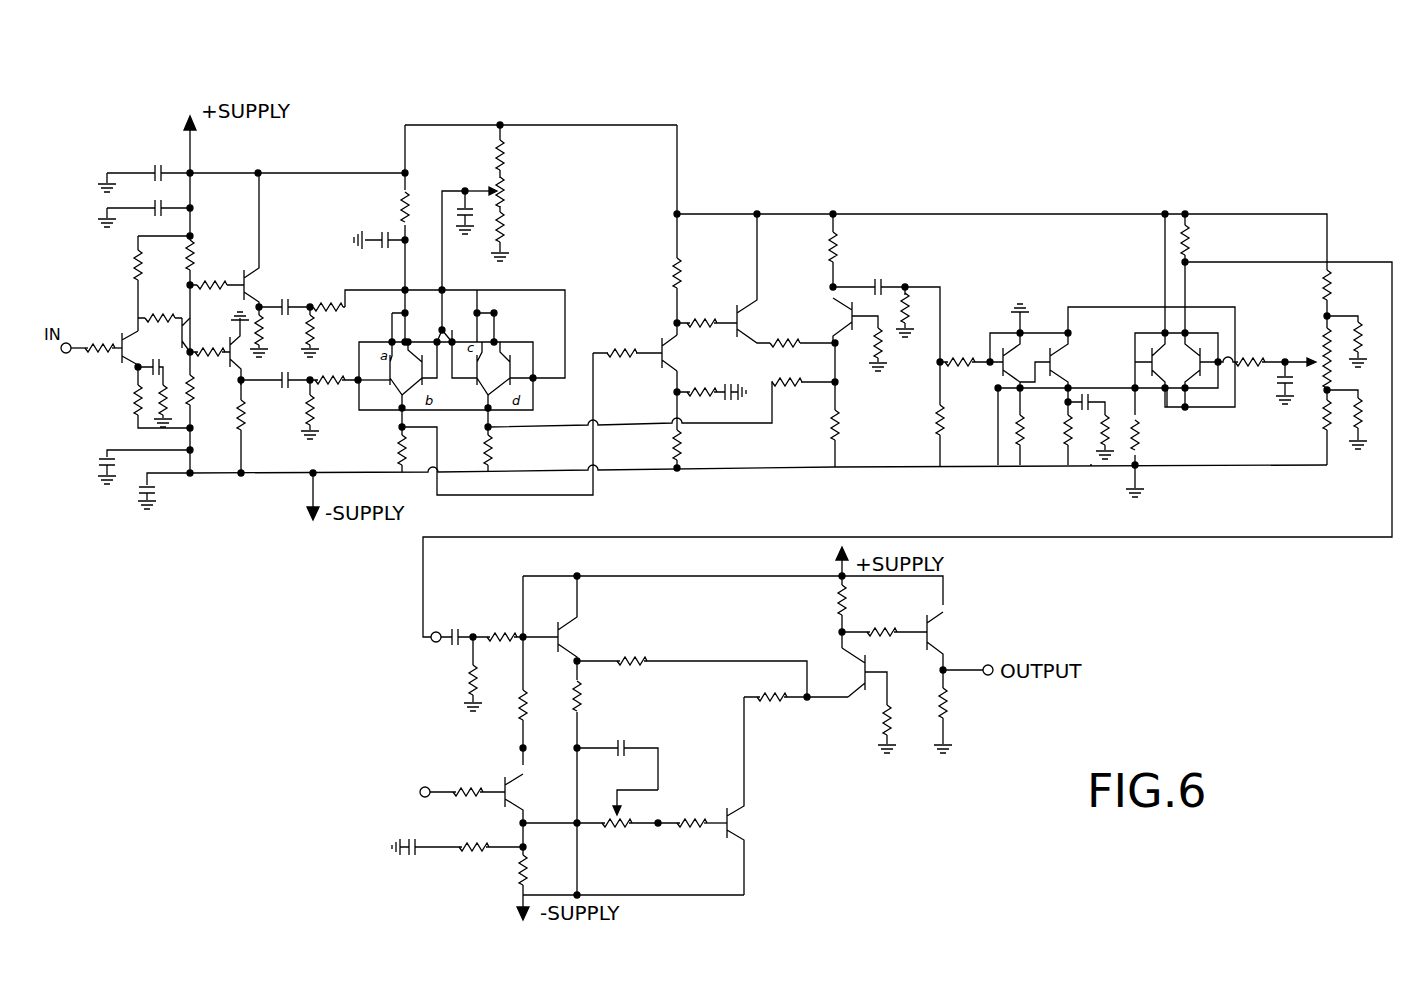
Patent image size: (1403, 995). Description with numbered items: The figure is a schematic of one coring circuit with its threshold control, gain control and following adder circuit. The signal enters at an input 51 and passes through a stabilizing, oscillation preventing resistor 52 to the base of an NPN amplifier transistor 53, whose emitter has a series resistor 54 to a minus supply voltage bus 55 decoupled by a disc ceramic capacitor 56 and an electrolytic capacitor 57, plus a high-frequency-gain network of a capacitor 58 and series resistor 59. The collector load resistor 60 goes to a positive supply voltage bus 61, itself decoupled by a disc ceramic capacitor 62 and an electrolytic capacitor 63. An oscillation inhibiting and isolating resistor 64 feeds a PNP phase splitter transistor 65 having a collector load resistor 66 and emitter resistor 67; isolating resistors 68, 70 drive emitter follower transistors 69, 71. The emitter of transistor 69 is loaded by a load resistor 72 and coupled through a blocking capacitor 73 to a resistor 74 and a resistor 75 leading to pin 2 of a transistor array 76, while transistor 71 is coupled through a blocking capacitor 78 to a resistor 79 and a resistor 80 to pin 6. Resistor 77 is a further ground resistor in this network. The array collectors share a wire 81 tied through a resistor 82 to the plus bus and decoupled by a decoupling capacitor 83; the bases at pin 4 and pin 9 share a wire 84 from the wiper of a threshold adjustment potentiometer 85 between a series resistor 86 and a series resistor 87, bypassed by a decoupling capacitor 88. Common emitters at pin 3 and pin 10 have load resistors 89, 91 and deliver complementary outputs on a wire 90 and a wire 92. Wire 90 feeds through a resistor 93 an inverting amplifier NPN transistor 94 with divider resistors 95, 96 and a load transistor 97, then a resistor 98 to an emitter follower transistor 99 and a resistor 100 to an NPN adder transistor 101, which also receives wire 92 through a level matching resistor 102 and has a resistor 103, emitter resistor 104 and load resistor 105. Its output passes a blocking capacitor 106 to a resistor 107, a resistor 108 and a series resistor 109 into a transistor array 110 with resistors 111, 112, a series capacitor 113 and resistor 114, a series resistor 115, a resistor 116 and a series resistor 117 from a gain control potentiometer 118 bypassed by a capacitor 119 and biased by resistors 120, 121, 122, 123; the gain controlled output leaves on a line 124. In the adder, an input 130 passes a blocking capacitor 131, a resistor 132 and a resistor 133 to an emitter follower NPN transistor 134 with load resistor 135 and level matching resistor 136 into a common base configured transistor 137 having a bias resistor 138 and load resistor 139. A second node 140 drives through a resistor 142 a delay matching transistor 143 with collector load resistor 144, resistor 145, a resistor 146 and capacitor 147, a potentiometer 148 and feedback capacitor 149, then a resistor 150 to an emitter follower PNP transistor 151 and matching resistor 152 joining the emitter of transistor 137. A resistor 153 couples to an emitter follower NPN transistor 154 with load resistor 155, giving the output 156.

The pin 2 is at (358, 378).
The pin 3 is at (400, 410).
The pin 4 is at (436, 334).
The pin 6 is at (538, 366).
The pin 9 is at (452, 342).
The pin 10 is at (486, 410).
The input 51 is at (70, 354).
The stabilizing, oscillation preventing resistor 52 is at (107, 342).
The NPN transistor 53 is at (136, 348).
The series resistor 54 is at (132, 396).
The minus supply voltage bus 55 is at (208, 478).
The disc ceramic capacitor 56 is at (102, 466).
The electrolytic capacitor 57 is at (140, 494).
The capacitor 58 is at (155, 363).
The series resistor 59 is at (158, 404).
The load resistor 60 is at (135, 266).
The positive supply voltage bus 61 is at (238, 172).
The disc ceramic capacitor 62 is at (162, 164).
The electrolytic capacitor 63 is at (157, 204).
The oscillation inhibiting and isolating resistor 64 is at (178, 312).
The PNP transistor 65 is at (198, 334).
The collector load resistor 66 is at (201, 392).
The emitter resistor 67 is at (204, 249).
The isolating resistor 68 is at (210, 363).
The NPN emitter follower transistor 69 is at (244, 348).
The isolating resistor 70 is at (208, 286).
The emitter follower transistor 71 is at (261, 240).
The load resistor 72 is at (254, 428).
The blocking capacitor 73 is at (270, 386).
The resistor 74 is at (321, 409).
The resistor 75 is at (338, 386).
The transistor array 76 is at (381, 338).
The resistor 77 is at (270, 332).
The blocking capacitor 78 is at (276, 306).
The resistor 79 is at (319, 332).
The resistor 80 is at (324, 304).
The wire 81 is at (475, 306).
The resistor 82 is at (402, 212).
The decoupling capacitor 83 is at (378, 238).
The wire 84 is at (442, 251).
The threshold adjustment potentiometer 85 is at (504, 193).
The series resistor 86 is at (504, 160).
The series resistor 87 is at (504, 225).
The decoupling capacitor 88 is at (442, 202).
The load resistor 89 is at (395, 450).
The wire 90 is at (546, 498).
The load resistor 91 is at (488, 448).
The wire 92 is at (574, 422).
The resistor 93 is at (620, 342).
The inverting amplifier NPN transistor 94 is at (674, 353).
The resistor 95 is at (686, 448).
The resistor 96 is at (696, 388).
The load transistor 97 is at (656, 272).
The resistor 98 is at (718, 322).
The transistor 99 is at (758, 277).
The resistor 100 is at (786, 346).
The NPN adder transistor 101 is at (838, 302).
The level matching resistor 102 is at (782, 388).
The resistor 103 is at (882, 358).
The emitter resistor 104 is at (838, 428).
The load resistor 105 is at (826, 248).
The blocking capacitor 106 is at (880, 280).
The resistor 107 is at (913, 290).
The resistor 108 is at (934, 416).
The series resistor 109 is at (976, 354).
The transistor array 110 is at (1122, 352).
The resistor 111 is at (1024, 422).
The resistor 112 is at (1066, 436).
The series capacitor 113 is at (1080, 400).
The resistor 114 is at (1097, 466).
The series resistor 115 is at (1142, 438).
The resistor 116 is at (1187, 242).
The series resistor 117 is at (1268, 358).
The gain control potentiometer 118 is at (1313, 358).
The capacitor 119 is at (1280, 392).
The resistor 120 is at (1320, 288).
The resistor 121 is at (1366, 338).
The resistor 122 is at (1324, 433).
The resistor 123 is at (1366, 428).
The line 124 is at (1364, 526).
The input 130 is at (430, 640).
The blocking capacitor 131 is at (452, 650).
The resistor 132 is at (468, 684).
The resistor 133 is at (504, 626).
The emitter follower NPN transistor 134 is at (577, 632).
The load resistor 135 is at (582, 704).
The level matching resistor 136 is at (622, 662).
The common base configured transistor 137 is at (862, 672).
The bias resistor 138 is at (882, 718).
The load resistor 139 is at (836, 604).
The node 140 is at (418, 788).
The resistor 142 is at (474, 780).
The delay matching transistor 143 is at (541, 798).
The collector load resistor 144 is at (518, 716).
The resistor 145 is at (534, 852).
The resistor 146 is at (456, 844).
The capacitor 147 is at (418, 840).
The potentiometer 148 is at (611, 830).
The feedback capacitor 149 is at (618, 748).
The resistor 150 is at (708, 816).
The emitter follower PNP transistor 151 is at (747, 796).
The matching resistor 152 is at (764, 702).
The resistor 153 is at (898, 626).
The emitter follower NPN transistor 154 is at (948, 650).
The load resistor 155 is at (947, 729).
The output 156 is at (988, 674).